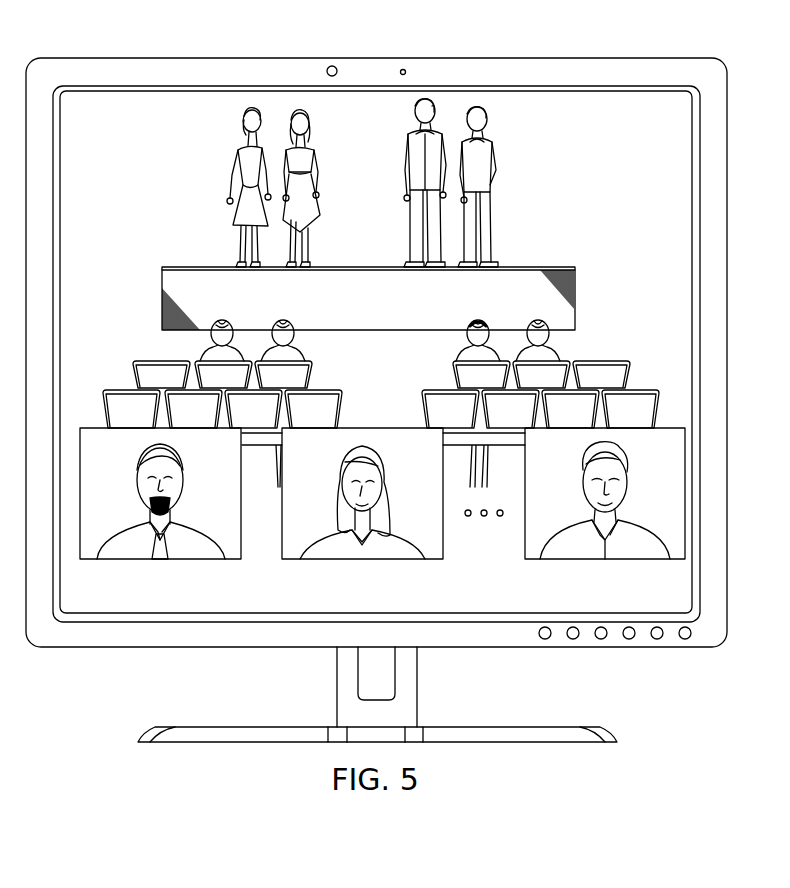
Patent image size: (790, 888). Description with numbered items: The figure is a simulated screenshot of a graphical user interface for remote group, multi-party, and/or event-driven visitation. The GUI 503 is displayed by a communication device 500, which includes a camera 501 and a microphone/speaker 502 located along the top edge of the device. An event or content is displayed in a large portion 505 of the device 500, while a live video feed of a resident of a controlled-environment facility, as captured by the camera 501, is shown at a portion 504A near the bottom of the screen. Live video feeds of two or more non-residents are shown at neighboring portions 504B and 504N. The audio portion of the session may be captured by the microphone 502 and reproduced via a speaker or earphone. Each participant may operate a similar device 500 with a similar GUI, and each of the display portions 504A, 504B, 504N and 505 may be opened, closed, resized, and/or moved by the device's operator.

The communication device 500 is at (130, 55).
The camera 501 is at (330, 66).
The microphone/speaker 502 is at (405, 69).
The graphical user interface 503 is at (634, 147).
The portion 504A is at (122, 562).
The portion 504B is at (323, 562).
The portion 504N is at (645, 562).
The portion 505 is at (150, 182).